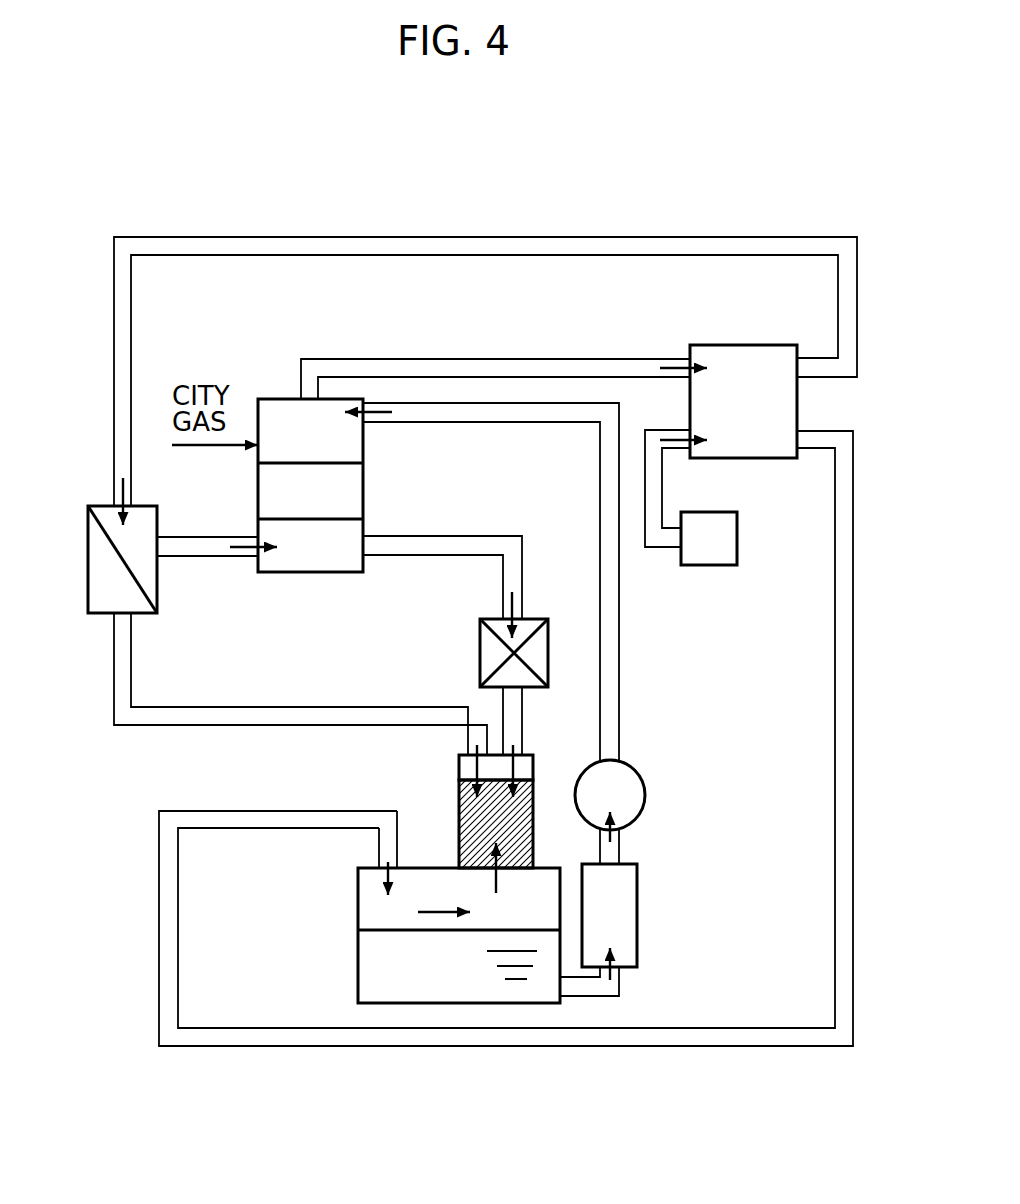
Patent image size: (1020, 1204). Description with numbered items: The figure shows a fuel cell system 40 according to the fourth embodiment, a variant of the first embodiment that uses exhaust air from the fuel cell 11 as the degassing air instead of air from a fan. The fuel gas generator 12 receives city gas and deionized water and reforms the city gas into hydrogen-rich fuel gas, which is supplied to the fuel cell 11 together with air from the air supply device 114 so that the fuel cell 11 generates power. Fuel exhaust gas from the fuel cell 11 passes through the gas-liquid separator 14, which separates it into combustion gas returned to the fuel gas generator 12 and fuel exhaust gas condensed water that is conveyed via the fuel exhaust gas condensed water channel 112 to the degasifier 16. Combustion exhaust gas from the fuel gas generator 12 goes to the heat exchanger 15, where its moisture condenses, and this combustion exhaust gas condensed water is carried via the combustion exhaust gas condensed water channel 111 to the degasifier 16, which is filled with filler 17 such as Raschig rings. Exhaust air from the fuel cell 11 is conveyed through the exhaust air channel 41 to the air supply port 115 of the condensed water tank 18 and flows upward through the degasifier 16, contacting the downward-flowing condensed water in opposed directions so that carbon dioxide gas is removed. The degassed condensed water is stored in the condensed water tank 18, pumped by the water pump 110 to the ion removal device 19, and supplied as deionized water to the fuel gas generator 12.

The fuel cell system 40 is at (94, 242).
The exhaust air channel 41 is at (854, 737).
The fuel cell 11 is at (784, 413).
The fuel gas generator 12 is at (279, 393).
The gas-liquid separator 14 is at (102, 602).
The heat exchanger 15 is at (535, 625).
The degasifier 16 is at (533, 766).
The filler 17 is at (488, 815).
The condensed water tank 18 is at (376, 958).
The ion removal device 19 is at (627, 915).
The water pump 110 is at (645, 777).
The combustion exhaust gas condensed water channel 111 is at (523, 724).
The fuel exhaust gas condensed water channel 112 is at (287, 707).
The air supply device 114 is at (730, 545).
The air supply port 115 is at (385, 860).